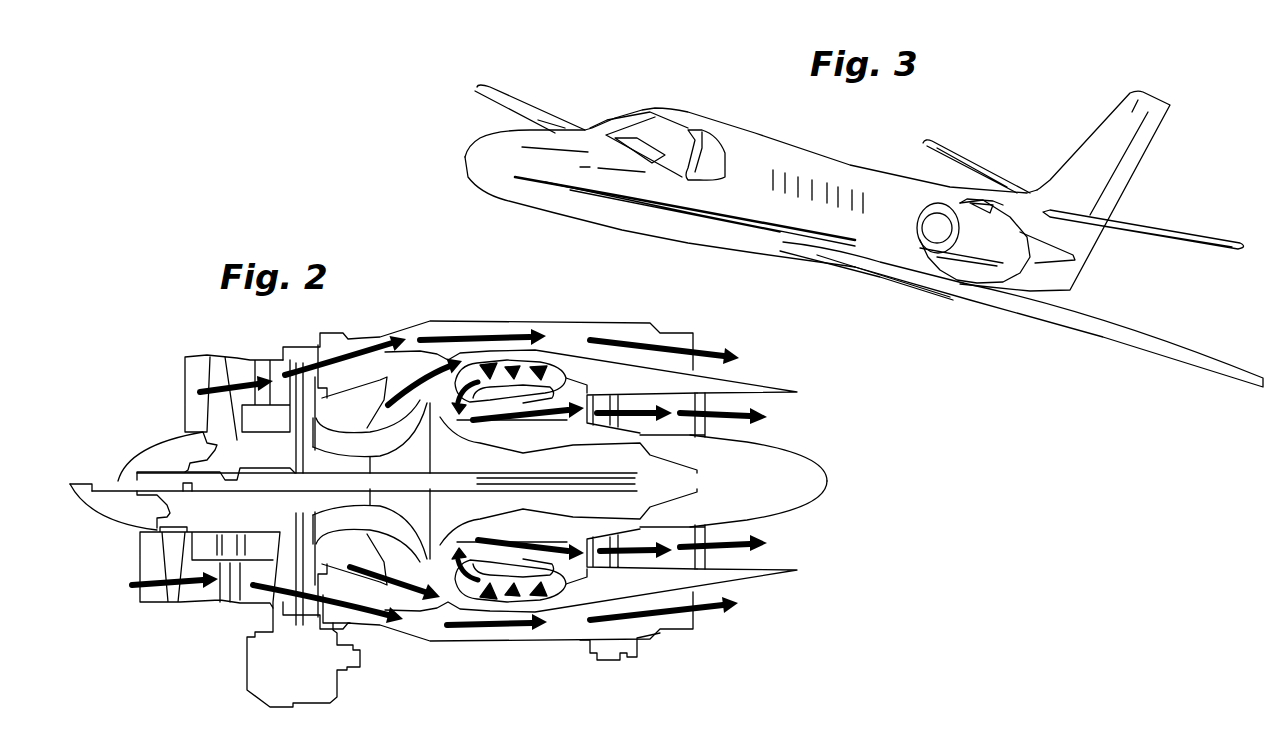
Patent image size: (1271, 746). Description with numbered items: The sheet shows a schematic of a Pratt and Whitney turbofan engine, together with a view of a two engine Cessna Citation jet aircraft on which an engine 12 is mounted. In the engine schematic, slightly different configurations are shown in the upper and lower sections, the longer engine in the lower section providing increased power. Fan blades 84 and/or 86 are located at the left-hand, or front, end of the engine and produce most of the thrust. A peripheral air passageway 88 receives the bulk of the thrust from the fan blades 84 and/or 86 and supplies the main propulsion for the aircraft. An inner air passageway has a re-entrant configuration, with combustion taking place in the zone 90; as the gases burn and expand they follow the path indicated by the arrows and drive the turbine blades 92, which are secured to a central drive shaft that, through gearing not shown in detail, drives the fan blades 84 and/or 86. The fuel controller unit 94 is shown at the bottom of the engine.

In FIG. 3, the turbofan engine nacelle 12 is at (995, 252).
In FIG. 2, the fan blades 84 is at (223, 410).
In FIG. 2, the fan blades 86 is at (175, 545).
In FIG. 2, the peripheral air passageway 88 is at (432, 330).
In FIG. 2, the combustion zone 90 is at (547, 380).
In FIG. 2, the turbine blades 92 is at (623, 533).
In FIG. 2, the fuel controller unit 94 is at (310, 677).